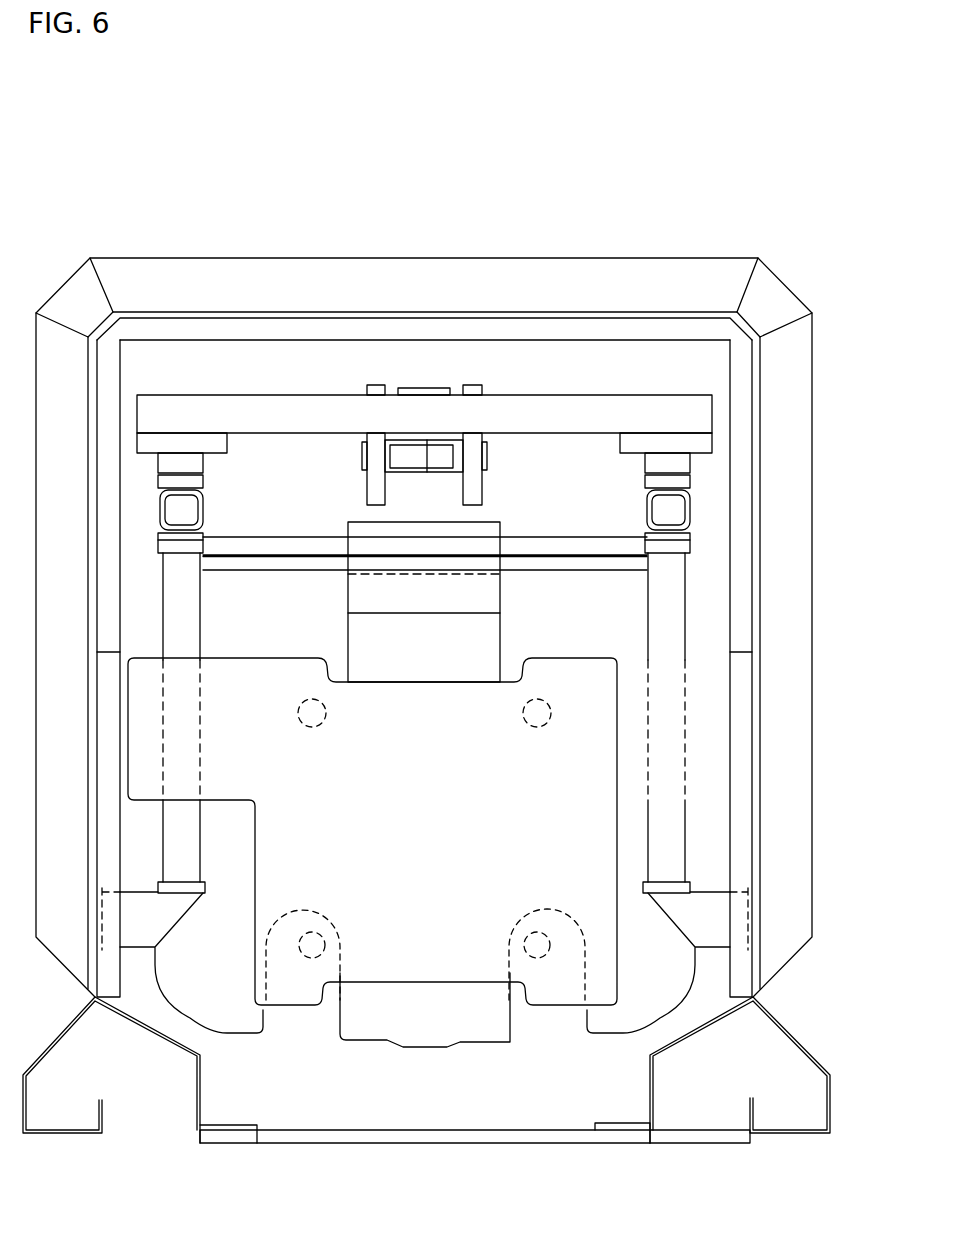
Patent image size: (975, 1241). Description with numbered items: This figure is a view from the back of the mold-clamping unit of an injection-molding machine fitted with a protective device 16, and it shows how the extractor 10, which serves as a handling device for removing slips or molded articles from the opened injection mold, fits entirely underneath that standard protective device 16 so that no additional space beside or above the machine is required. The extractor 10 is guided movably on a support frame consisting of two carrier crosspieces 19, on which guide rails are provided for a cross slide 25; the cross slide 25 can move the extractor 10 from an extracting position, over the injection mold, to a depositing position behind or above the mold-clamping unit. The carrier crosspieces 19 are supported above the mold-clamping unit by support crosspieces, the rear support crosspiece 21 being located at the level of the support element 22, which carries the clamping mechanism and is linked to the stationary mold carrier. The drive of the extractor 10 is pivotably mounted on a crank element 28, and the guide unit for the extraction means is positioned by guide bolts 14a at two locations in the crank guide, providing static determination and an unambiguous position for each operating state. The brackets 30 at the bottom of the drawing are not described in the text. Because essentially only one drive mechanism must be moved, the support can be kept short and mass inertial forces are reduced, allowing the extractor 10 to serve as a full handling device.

The extractor 10 is at (423, 352).
The protective device 16 is at (536, 282).
The cross slide 25 is at (567, 403).
The guide bolts 14a is at (485, 460).
The crank element 28 is at (375, 492).
The carrier crosspieces 19 is at (198, 507).
The rear support crosspiece 21 is at (185, 613).
The support element 22 is at (400, 845).
The mounting brackets 30 is at (198, 1088).